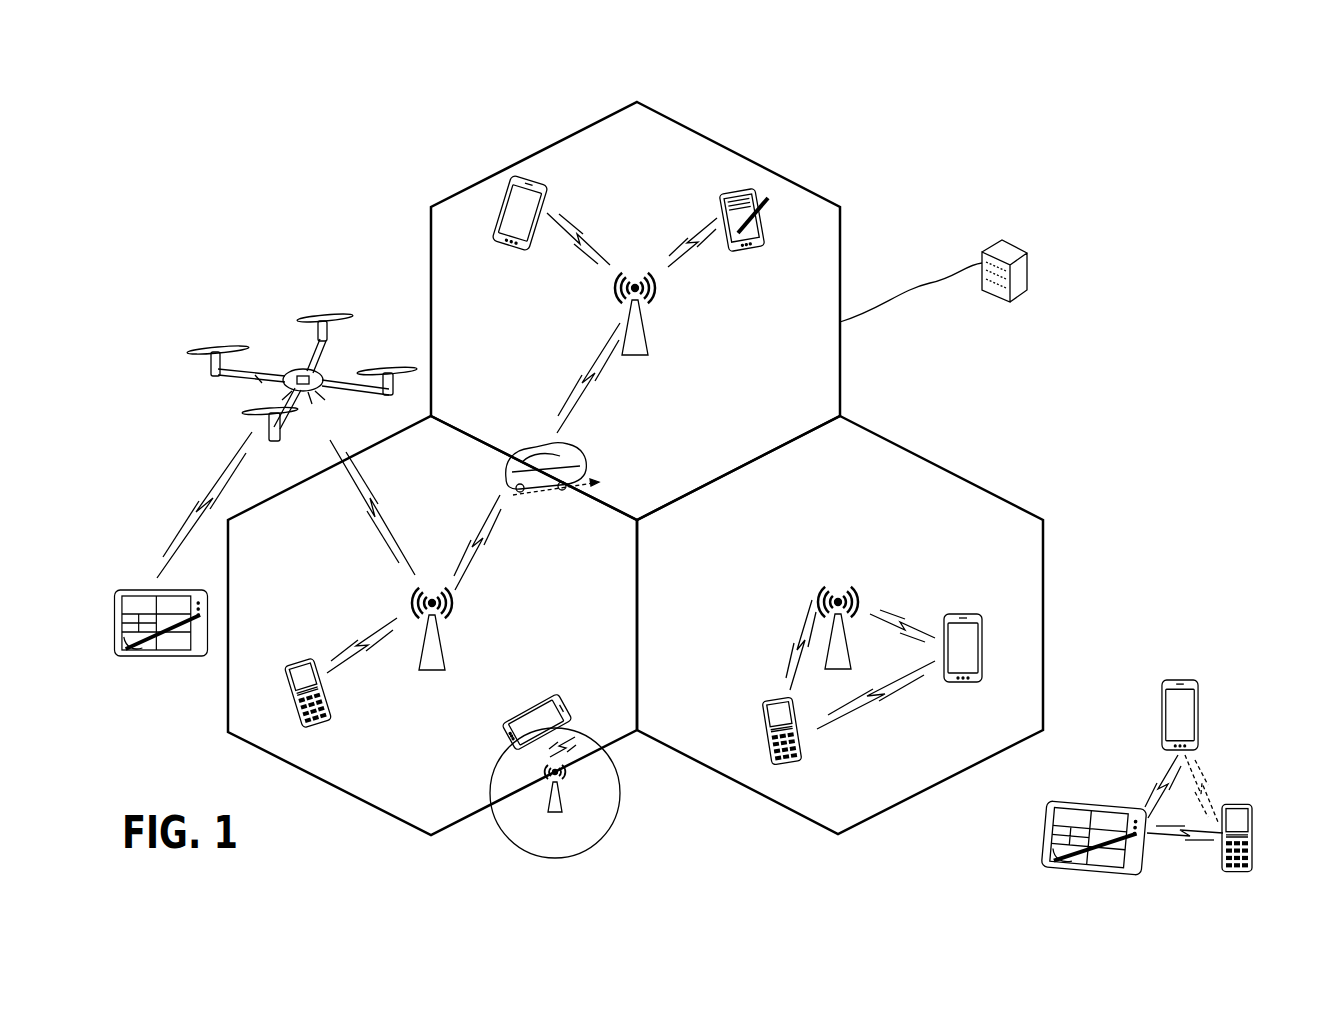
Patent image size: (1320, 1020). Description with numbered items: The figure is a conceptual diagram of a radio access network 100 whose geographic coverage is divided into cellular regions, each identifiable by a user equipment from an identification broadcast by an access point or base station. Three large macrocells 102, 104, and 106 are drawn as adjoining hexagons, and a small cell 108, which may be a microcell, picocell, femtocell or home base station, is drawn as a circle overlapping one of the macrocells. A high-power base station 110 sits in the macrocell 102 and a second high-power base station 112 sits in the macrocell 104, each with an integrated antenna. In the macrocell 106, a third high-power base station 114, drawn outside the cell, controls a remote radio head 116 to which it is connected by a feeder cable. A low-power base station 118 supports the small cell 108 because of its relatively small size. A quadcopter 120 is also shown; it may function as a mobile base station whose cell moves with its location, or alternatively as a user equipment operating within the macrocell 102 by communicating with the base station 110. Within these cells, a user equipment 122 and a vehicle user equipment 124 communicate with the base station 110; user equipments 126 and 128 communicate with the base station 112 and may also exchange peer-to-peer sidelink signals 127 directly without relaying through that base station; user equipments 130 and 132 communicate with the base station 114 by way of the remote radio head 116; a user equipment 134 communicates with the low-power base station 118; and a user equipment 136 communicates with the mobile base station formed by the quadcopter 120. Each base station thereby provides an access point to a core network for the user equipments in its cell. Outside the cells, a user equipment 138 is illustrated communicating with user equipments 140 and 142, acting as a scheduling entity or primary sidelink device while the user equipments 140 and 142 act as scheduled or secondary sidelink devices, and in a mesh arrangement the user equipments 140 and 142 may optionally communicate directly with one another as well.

The radio access network 100 is at (982, 146).
The macrocell 102 is at (245, 740).
The macrocell 104 is at (972, 482).
The macrocell 106 is at (578, 134).
The small cell 108 is at (502, 752).
The high-power base station 110 is at (435, 668).
The high-power base station 112 is at (836, 588).
The high-power base station 114 is at (1012, 292).
The remote radio head 116 is at (635, 357).
The low-power base station 118 is at (555, 812).
The quadcopter 120 is at (298, 318).
The user equipment 122 is at (300, 663).
The user equipment 124 is at (510, 458).
The user equipment 126 is at (773, 703).
The sidelink signals 127 is at (870, 700).
The user equipment 128 is at (950, 615).
The user equipment 130 is at (509, 243).
The user equipment 132 is at (765, 250).
The user equipment 134 is at (560, 693).
The user equipment 136 is at (142, 590).
The user equipment 138 is at (1113, 805).
The user equipment 140 is at (1190, 680).
The user equipment 142 is at (1247, 805).